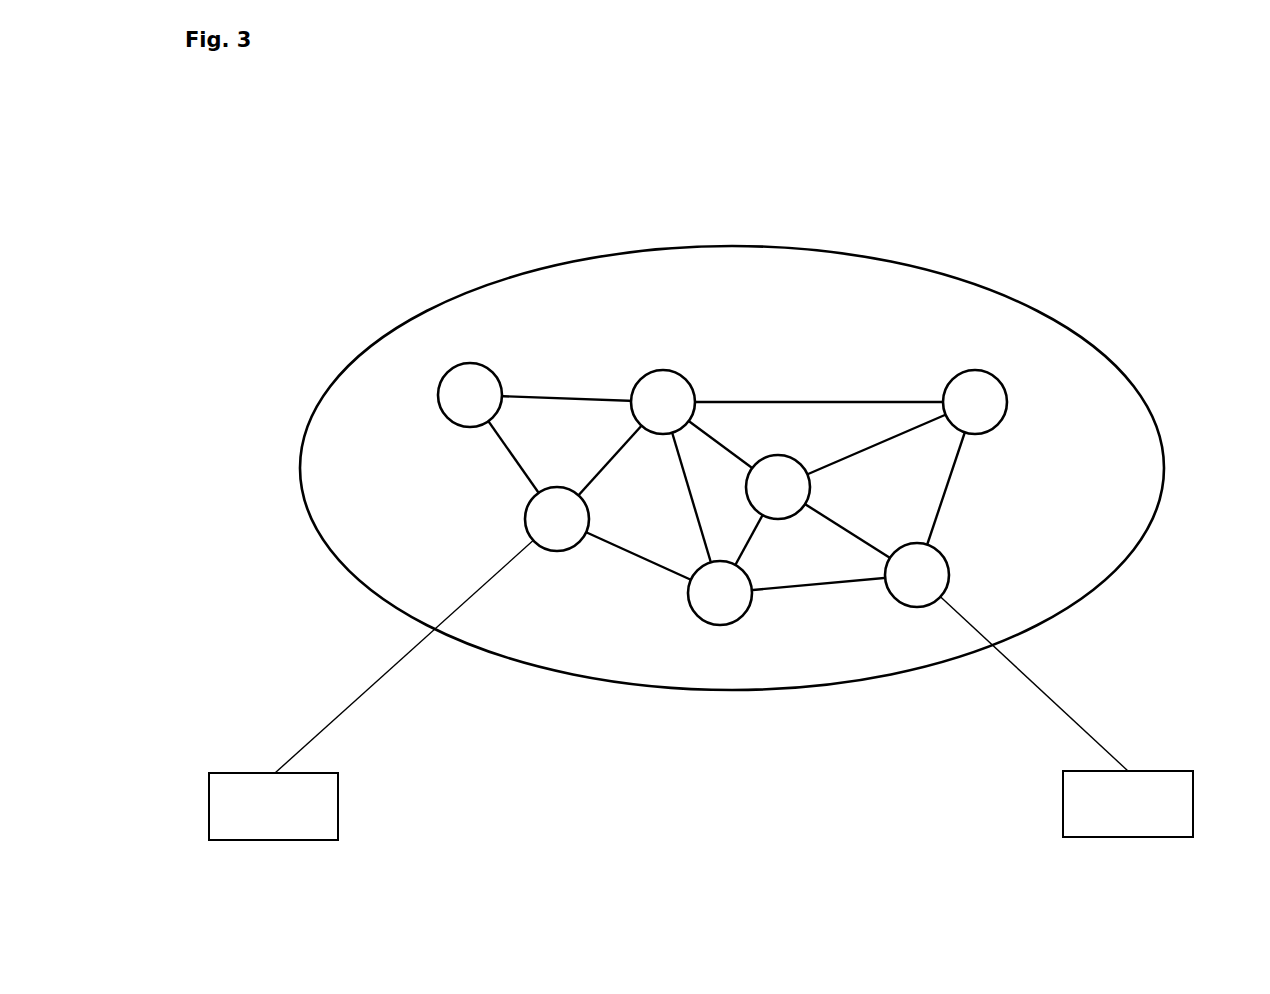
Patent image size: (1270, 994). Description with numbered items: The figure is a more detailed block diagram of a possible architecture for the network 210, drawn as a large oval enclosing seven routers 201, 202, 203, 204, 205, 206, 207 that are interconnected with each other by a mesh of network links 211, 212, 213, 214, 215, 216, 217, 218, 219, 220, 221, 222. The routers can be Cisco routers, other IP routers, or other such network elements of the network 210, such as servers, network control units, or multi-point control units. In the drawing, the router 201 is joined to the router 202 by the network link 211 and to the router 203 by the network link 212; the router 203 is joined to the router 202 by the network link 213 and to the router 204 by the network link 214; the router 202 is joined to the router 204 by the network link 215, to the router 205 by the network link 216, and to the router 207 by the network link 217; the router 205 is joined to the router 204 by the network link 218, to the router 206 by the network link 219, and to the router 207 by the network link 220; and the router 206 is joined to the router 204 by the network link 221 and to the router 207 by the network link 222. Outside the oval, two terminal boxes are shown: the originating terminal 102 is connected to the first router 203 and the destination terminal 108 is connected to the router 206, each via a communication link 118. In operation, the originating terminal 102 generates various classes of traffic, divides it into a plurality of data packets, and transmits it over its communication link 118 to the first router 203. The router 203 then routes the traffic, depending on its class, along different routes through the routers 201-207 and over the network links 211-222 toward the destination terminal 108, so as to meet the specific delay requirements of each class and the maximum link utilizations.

The originating terminal 102 is at (265, 840).
The destination terminal 108 is at (1128, 837).
The communication link 118 is at (353, 702).
The router 201 is at (470, 395).
The router 202 is at (663, 402).
The first router 203 is at (557, 519).
The router 204 is at (720, 593).
The router 205 is at (778, 487).
The router 206 is at (917, 575).
The router 207 is at (975, 402).
The network 210 is at (1148, 410).
The network link 211 is at (566, 405).
The network link 212 is at (513, 457).
The network link 213 is at (610, 460).
The network link 214 is at (638, 556).
The network link 215 is at (691, 497).
The network link 216 is at (720, 444).
The network link 217 is at (819, 407).
The network link 218 is at (750, 540).
The network link 219 is at (847, 531).
The network link 220 is at (876, 444).
The network link 221 is at (818, 593).
The network link 222 is at (953, 488).